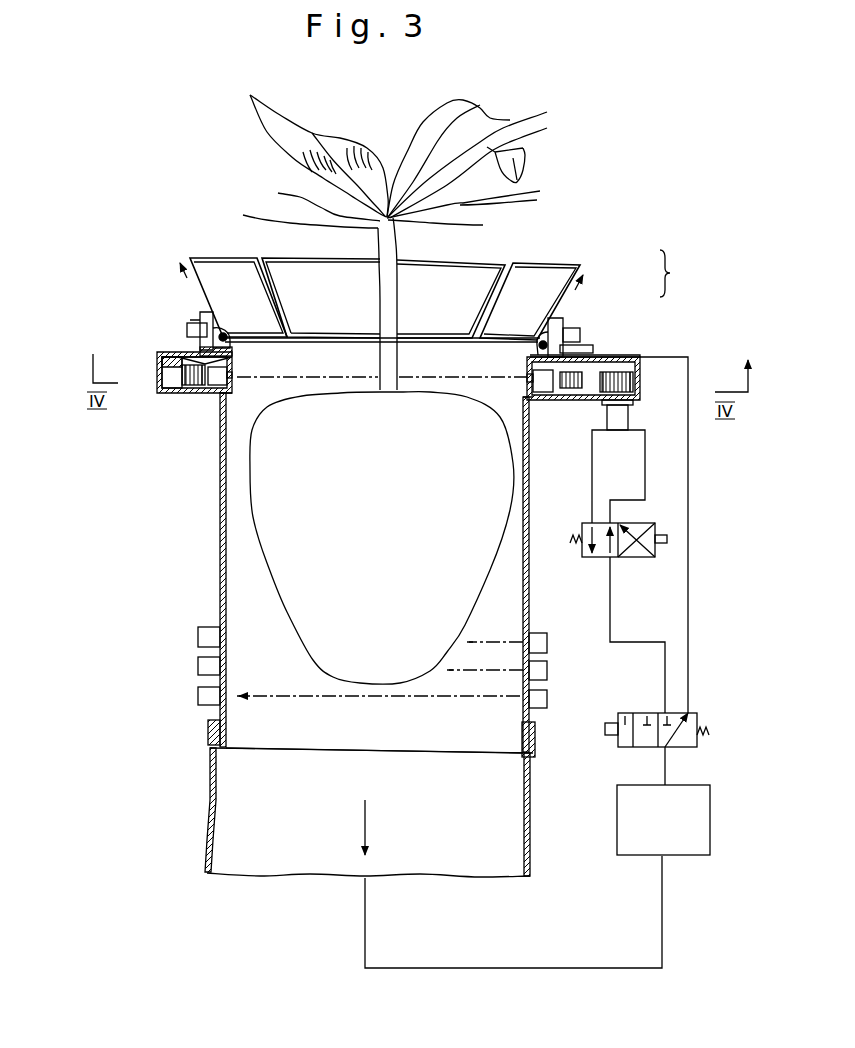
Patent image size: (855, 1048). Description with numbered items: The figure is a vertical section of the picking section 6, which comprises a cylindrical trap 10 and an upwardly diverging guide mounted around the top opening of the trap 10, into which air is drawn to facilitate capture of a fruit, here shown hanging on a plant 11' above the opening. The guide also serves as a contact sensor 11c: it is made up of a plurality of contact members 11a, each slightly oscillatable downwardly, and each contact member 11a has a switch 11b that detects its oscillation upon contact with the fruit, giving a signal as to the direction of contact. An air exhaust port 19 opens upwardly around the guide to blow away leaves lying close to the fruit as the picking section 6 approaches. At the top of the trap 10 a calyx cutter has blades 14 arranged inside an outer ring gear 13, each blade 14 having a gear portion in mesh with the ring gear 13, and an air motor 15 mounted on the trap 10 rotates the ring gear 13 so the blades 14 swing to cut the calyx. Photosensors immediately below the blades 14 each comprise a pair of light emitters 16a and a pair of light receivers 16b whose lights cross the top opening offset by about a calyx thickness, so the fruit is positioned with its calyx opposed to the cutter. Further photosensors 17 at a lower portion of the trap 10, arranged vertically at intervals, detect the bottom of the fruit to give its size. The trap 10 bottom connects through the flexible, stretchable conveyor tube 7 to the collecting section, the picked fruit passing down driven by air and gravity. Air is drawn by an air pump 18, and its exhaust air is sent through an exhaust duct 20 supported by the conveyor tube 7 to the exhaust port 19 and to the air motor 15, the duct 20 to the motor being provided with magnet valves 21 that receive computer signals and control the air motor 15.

The plant 11' is at (447, 242).
The contact members 11a is at (218, 262).
The switch 11b is at (186, 330).
The contact sensor 11c is at (685, 273).
The air exhaust port 19 is at (197, 303).
The outer ring gear 13 is at (172, 388).
The blades 14 is at (205, 393).
The light receivers 16b is at (228, 378).
The light emitters 16a is at (545, 400).
The air motor 15 is at (620, 414).
The magnet valves 21 is at (596, 558).
The exhaust duct 20 is at (610, 613).
The air pump 18 is at (663, 820).
The cylindrical trap 10 is at (221, 535).
The picking section 6 is at (118, 512).
The photosensors 17 is at (198, 696).
The conveyor tube 7 is at (530, 860).